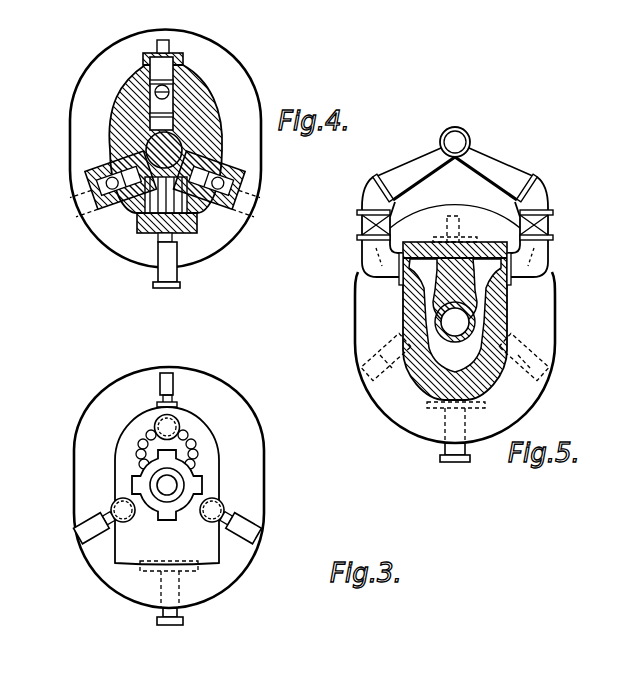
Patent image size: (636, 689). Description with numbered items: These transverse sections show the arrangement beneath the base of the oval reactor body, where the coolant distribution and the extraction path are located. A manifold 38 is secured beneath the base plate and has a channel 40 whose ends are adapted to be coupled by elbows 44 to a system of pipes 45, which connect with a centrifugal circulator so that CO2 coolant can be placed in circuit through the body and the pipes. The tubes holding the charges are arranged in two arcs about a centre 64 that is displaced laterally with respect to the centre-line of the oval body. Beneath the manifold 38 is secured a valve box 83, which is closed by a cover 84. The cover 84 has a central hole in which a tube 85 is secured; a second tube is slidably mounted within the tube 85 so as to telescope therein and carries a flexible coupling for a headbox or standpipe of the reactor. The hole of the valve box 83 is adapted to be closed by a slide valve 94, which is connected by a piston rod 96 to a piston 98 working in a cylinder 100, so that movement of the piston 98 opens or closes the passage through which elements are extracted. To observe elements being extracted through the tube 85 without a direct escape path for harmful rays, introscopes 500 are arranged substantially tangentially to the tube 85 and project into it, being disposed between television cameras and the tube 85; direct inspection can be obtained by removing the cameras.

In FIG. 4, the valve box 83 is at (195, 99).
In FIG. 4, the slide valve 94 is at (132, 147).
In FIG. 4, the piston rod 96 is at (197, 211).
In FIG. 4, the piston 98 is at (172, 239).
In FIG. 4, the cylinder 100 is at (167, 273).
In FIG. 3, the cylinder 100 is at (170, 613).
In FIG. 5, the system of pipes 45 is at (458, 140).
In FIG. 5, the elbows 44 is at (360, 252).
In FIG. 5, the channel 40 is at (414, 266).
In FIG. 5, the manifold 38 is at (443, 321).
In FIG. 5, the centre 64 is at (447, 313).
In FIG. 3, the tube 85 is at (172, 483).
In FIG. 3, the cover 84 is at (200, 543).
In FIG. 3, the introscopes 500 is at (87, 535).